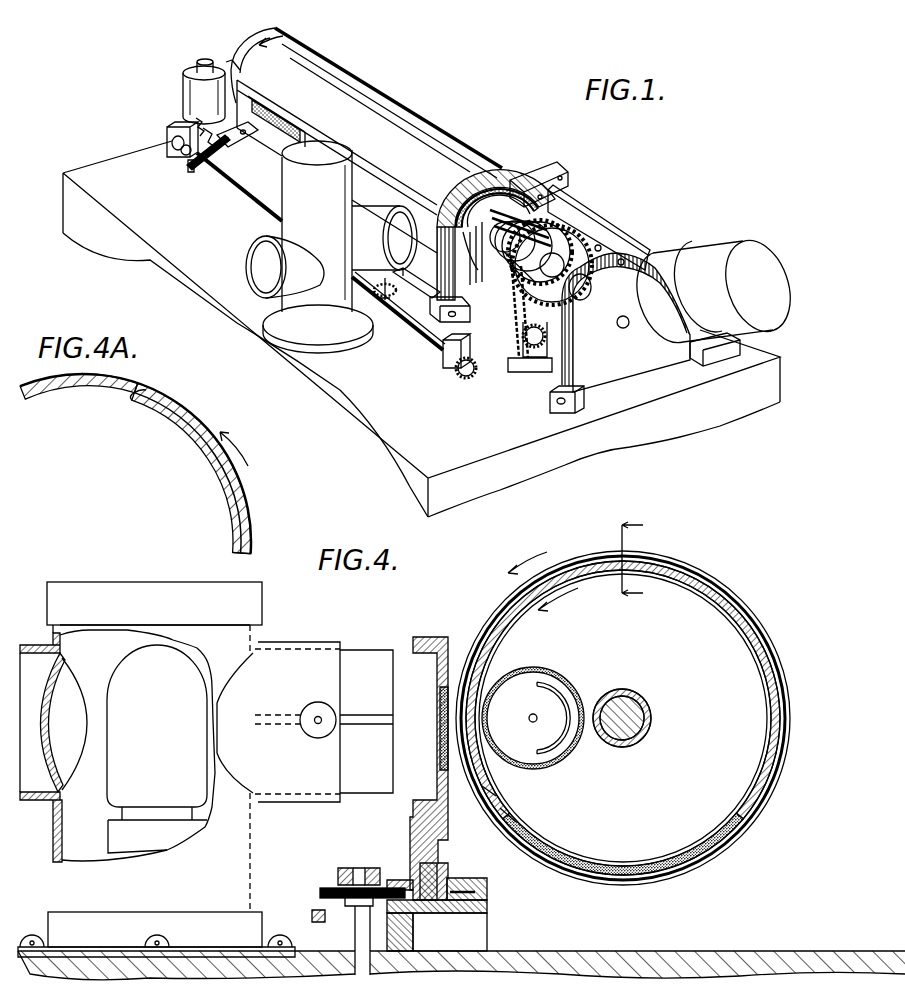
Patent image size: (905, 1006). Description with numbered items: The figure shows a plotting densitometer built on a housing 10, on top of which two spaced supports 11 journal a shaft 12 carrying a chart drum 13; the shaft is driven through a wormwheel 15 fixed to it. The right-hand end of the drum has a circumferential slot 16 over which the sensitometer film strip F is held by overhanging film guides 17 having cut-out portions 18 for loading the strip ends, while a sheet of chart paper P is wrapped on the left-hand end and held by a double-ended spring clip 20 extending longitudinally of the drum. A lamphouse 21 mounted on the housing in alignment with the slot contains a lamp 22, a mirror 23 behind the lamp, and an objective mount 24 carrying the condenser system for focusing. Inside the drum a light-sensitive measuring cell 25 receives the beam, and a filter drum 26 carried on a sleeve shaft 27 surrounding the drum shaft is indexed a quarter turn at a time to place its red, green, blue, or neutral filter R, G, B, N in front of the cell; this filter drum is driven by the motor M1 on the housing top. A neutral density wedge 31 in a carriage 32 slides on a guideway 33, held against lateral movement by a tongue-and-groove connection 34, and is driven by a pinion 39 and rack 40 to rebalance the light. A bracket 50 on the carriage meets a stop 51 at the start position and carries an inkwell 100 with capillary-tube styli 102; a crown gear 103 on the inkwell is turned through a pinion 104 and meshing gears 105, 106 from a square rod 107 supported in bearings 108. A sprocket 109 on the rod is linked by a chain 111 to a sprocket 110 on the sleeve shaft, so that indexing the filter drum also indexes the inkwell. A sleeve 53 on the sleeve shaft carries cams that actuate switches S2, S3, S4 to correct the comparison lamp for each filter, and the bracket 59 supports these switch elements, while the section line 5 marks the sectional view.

In FIG. 1, the housing 10 is at (421, 329).
In FIG. 4, the housing 10 is at (580, 963).
In FIG. 1, the spaced supports 11 is at (583, 333).
In FIG. 4, the shaft 12 is at (636, 706).
In FIG. 1, the chart drum 13 is at (393, 97).
In FIG. 4A, the chart drum 13 is at (213, 464).
In FIG. 4, the chart drum 13 is at (717, 582).
In FIG. 1, the wormwheel 15 is at (602, 246).
In FIG. 1, the circumferential slot 16 is at (492, 175).
In FIG. 4, the film guides 17 is at (762, 623).
In FIG. 4, the cut-out portions 18 is at (550, 870).
In FIG. 1, the double-ended spring clip 20 is at (238, 55).
In FIG. 4A, the double-ended spring clip 20 is at (148, 393).
In FIG. 1, the lamphouse 21 is at (318, 247).
In FIG. 4, the lamphouse 21 is at (253, 866).
In FIG. 4, the lamp 22 is at (156, 769).
In FIG. 1, the mirror 23 is at (262, 268).
In FIG. 4, the mirror 23 is at (43, 706).
In FIG. 1, the objective mount 24 is at (384, 238).
In FIG. 4, the objective mount 24 is at (355, 647).
In FIG. 4, the light-sensitive measuring cell 25 is at (545, 670).
In FIG. 4, the filter drum 26 is at (737, 812).
In FIG. 4, the sleeve shaft 27 is at (618, 690).
In FIG. 1, the neutral density wedge 31 is at (272, 148).
In FIG. 4, the neutral density wedge 31 is at (447, 687).
In FIG. 1, the carriage 32 is at (253, 57).
In FIG. 4, the carriage 32 is at (422, 636).
In FIG. 1, the guideway 33 is at (430, 303).
In FIG. 4, the guideway 33 is at (473, 877).
In FIG. 4, the tongue-and-groove connection 34 is at (480, 893).
In FIG. 1, the pinion 39 is at (384, 300).
In FIG. 4, the pinion 39 is at (332, 886).
In FIG. 4, the rack 40 is at (404, 880).
In FIG. 1, the bracket 50 is at (220, 150).
In FIG. 1, the stop 51 is at (183, 156).
In FIG. 1, the sleeve 53 is at (531, 261).
In FIG. 1, the bracket 59 is at (568, 178).
In FIG. 1, the inkwell 100 is at (183, 85).
In FIG. 1, the capillary tube 102 is at (192, 64).
In FIG. 1, the crown gear 103 is at (197, 118).
In FIG. 1, the pinion 104 is at (205, 128).
In FIG. 1, the gear 105 is at (210, 166).
In FIG. 1, the gear 106 is at (190, 173).
In FIG. 1, the square rod 107 is at (253, 207).
In FIG. 4, the square rod 107 is at (310, 916).
In FIG. 1, the bearings 108 is at (167, 135).
In FIG. 1, the sprocket 109 is at (462, 380).
In FIG. 1, the sprocket 110 is at (516, 318).
In FIG. 1, the chain 111 is at (521, 345).
In FIG. 1, the chart paper P is at (412, 117).
In FIG. 4A, the chart paper P is at (247, 508).
In FIG. 1, the sensitometer film strip F is at (505, 172).
In FIG. 4, the sensitometer film strip F is at (505, 817).
In FIG. 1, the blue filter B is at (471, 256).
In FIG. 4, the blue filter B is at (772, 720).
In FIG. 4, the green filter G is at (713, 600).
In FIG. 4, the neutral filter N is at (606, 866).
In FIG. 4, the red filter R is at (488, 790).
In FIG. 1, the switch S2 is at (600, 226).
In FIG. 1, the switch S3 is at (585, 220).
In FIG. 1, the switch S4 is at (565, 212).
In FIG. 1, the motor M1 is at (698, 247).
In FIG. 4, the section line 5 is at (641, 559).